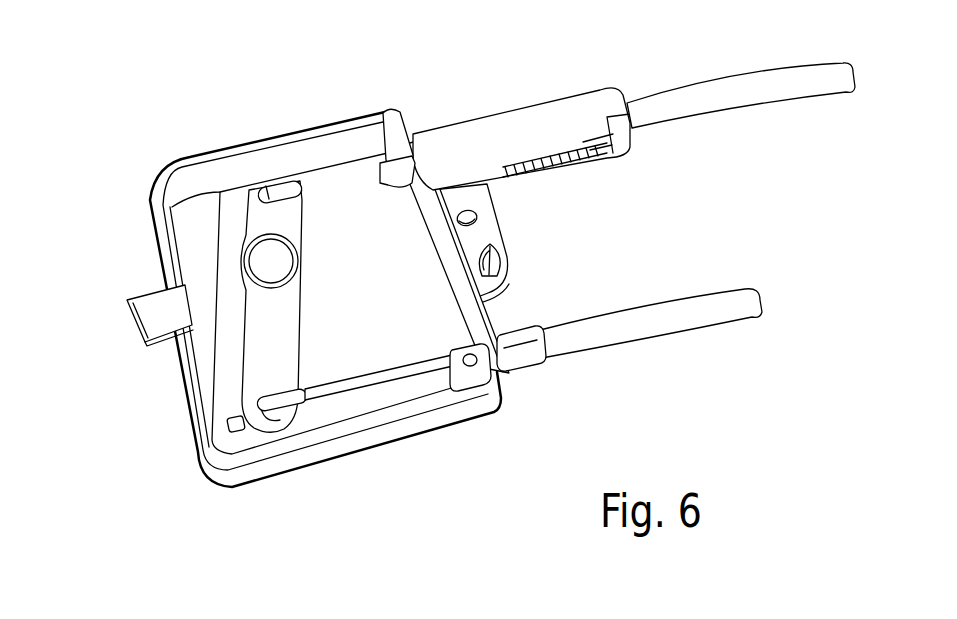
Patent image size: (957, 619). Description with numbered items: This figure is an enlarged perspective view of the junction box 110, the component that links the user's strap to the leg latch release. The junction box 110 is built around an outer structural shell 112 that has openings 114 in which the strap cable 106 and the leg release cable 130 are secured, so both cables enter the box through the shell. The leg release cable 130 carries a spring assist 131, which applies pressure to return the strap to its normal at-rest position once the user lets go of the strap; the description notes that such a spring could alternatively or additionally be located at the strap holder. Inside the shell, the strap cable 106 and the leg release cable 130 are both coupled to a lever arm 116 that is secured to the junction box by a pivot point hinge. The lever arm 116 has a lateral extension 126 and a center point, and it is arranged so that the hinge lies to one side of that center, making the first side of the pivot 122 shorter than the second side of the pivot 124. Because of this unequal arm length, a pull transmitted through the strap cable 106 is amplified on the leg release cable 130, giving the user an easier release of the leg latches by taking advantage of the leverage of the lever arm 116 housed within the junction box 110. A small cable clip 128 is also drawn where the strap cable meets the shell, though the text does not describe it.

The junction box 110 is at (115, 130).
The outer structural shell 112 is at (468, 302).
The openings 114 is at (398, 114).
The lever arm 116 is at (278, 324).
The first side of the pivot 122 is at (263, 227).
The second side of the pivot 124 is at (265, 383).
The lateral extension 126 is at (215, 278).
The tube clip 128 is at (528, 343).
The leg release cable 130 is at (720, 97).
The spring assist 131 is at (527, 130).
The strap cable 106 is at (698, 318).